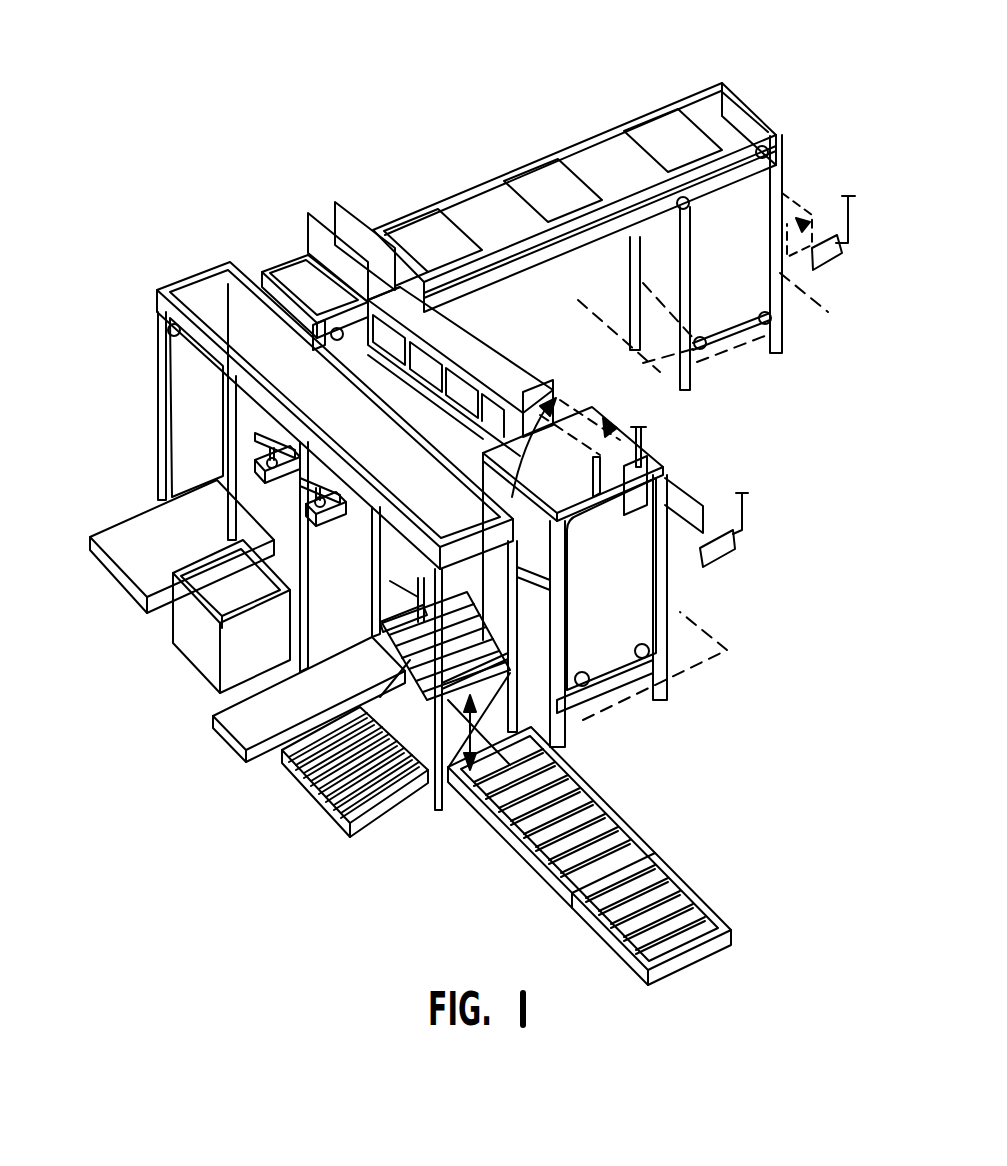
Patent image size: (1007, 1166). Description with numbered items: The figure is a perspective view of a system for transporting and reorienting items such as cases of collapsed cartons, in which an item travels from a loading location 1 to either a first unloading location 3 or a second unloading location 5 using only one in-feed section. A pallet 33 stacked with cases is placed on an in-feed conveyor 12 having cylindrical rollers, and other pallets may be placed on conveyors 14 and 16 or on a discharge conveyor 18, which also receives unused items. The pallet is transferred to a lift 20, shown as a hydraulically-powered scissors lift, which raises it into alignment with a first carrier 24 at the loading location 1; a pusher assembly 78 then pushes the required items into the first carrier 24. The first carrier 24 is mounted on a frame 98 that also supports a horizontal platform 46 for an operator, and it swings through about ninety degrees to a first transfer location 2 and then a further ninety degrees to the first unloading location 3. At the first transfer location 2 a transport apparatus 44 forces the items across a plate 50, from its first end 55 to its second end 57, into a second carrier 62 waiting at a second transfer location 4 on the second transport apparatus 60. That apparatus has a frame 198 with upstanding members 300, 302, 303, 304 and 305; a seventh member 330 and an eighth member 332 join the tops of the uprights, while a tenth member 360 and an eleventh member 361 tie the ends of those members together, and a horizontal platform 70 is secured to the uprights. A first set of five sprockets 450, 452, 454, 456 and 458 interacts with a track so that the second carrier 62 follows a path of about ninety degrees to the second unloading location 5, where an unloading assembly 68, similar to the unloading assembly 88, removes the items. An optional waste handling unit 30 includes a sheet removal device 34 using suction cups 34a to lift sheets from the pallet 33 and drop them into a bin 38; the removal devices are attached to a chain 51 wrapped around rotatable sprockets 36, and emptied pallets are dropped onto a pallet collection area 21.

The loading location 1 is at (528, 667).
The first transfer location 2 is at (566, 430).
The first unloading location 3 is at (684, 493).
The second transfer location 4 is at (303, 207).
The second unloading location 5 is at (790, 190).
The in-feed conveyor 12 is at (722, 914).
The conveyor 14 is at (568, 908).
The conveyor 16 is at (652, 740).
The discharge conveyor 18 is at (313, 792).
The lift 20 is at (438, 680).
The pallet collection area 21 is at (107, 585).
The first carrier 24 is at (552, 575).
The waste handling unit 30 is at (248, 440).
The pallet 33 is at (262, 468).
The sheet removal device 34 is at (300, 480).
The suction cups 34a is at (322, 522).
The sprockets 36 is at (160, 322).
The bin 38 is at (185, 680).
The transport apparatus 44 is at (648, 460).
The horizontal platform 46 is at (735, 665).
The plate 50 is at (470, 355).
The chain 51 is at (203, 365).
The first end of the plate 55 is at (430, 442).
The second end of the plate 57 is at (403, 280).
The second transport apparatus 60 is at (615, 88).
The second carrier 62 is at (350, 203).
The unloading assembly 68 is at (835, 262).
The horizontal platform 70 is at (825, 318).
The pusher assembly 78 is at (392, 612).
The unloading assembly 88 is at (748, 540).
The frame 98 is at (692, 595).
The frame 198 is at (520, 158).
The first upstanding member 300 is at (782, 355).
The third upstanding member 302 is at (695, 375).
The fourth upstanding member 303 is at (628, 268).
The fifth upstanding member 304 is at (315, 338).
The sixth upstanding member 305 is at (263, 278).
The seventh member 330 is at (745, 92).
The eighth member 332 is at (277, 285).
The tenth member 360 is at (542, 230).
The eleventh member 361 is at (467, 187).
The sprocket 450 is at (778, 324).
The sprocket 452 is at (672, 352).
The sprocket 454 is at (783, 138).
The sprocket 456 is at (690, 208).
The sprocket 458 is at (337, 340).